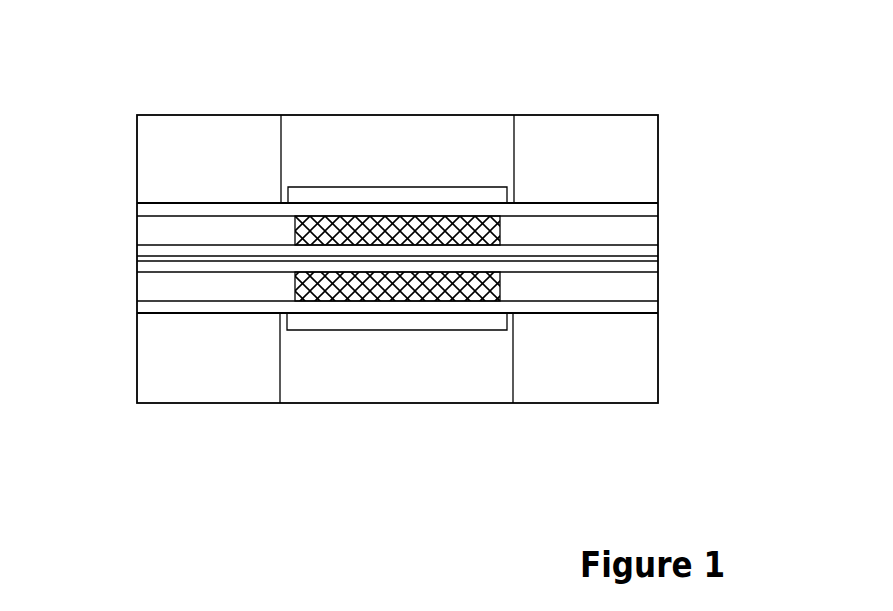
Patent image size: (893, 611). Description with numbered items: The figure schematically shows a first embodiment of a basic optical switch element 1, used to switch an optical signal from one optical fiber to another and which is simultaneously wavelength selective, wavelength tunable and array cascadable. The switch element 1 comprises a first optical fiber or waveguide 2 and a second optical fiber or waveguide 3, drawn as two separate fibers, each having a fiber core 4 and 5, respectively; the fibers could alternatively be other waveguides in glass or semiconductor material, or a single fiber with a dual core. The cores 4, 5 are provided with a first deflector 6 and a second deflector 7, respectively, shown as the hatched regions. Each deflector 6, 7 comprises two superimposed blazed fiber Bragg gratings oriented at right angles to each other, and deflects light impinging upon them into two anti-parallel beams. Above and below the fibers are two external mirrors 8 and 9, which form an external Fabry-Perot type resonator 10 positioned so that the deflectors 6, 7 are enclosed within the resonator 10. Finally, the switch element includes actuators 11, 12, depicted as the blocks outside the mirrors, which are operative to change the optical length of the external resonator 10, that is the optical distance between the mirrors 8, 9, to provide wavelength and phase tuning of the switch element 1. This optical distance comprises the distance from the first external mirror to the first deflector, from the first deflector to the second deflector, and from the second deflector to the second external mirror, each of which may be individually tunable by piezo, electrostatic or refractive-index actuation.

The optical switch element 1 is at (616, 442).
The first optical fiber or waveguide 2 is at (663, 311).
The second optical fiber or waveguide 3 is at (656, 206).
The fiber core 4 is at (145, 298).
The fiber core 5 is at (151, 225).
The first deflector 6 is at (311, 307).
The second deflector 7 is at (306, 224).
The external mirror 8 is at (342, 338).
The external mirror 9 is at (473, 181).
The external Fabry-Perot type resonator 10 is at (467, 237).
The actuator 11 is at (468, 378).
The actuator 12 is at (322, 139).